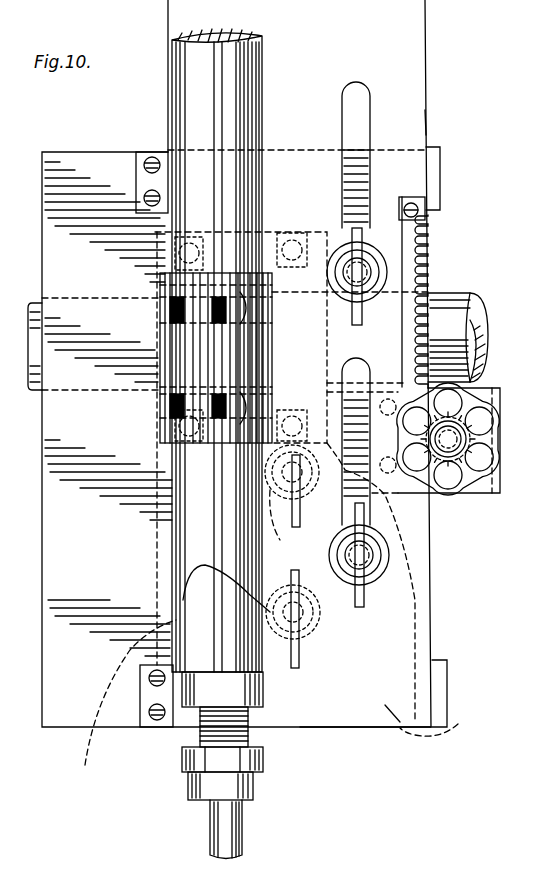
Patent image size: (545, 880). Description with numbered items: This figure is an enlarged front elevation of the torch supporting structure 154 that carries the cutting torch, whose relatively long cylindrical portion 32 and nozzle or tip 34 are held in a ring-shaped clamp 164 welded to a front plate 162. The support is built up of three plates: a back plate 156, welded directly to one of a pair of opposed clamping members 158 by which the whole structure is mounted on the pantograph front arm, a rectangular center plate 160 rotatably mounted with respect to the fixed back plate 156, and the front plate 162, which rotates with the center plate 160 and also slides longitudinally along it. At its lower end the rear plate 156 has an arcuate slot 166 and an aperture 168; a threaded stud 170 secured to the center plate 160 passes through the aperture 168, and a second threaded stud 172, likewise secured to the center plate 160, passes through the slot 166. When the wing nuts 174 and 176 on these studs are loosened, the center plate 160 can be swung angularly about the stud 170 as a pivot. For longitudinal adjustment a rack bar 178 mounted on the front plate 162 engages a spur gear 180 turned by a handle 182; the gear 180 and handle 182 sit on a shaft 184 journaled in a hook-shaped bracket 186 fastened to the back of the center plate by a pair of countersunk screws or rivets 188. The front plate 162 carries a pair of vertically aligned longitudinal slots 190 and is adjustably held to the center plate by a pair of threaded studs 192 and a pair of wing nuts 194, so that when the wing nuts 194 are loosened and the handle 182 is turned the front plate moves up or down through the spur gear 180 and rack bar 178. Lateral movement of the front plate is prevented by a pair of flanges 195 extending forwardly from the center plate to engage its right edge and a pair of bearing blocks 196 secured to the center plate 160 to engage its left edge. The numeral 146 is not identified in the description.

The cylindrical portion 32 is at (192, 548).
The nozzle or tip 34 is at (235, 828).
The shaft 146 is at (466, 323).
The supporting structure 154 is at (432, 122).
The back plate 156 is at (396, 721).
The clamping members 158 is at (318, 232).
The center plate 160 is at (62, 152).
The front plate 162 is at (410, 45).
The ring-shaped clamp 164 is at (172, 337).
The arcuate slot 166 is at (170, 677).
The aperture 168 is at (487, 352).
The threaded stud 170 is at (292, 501).
The second threaded stud 172 is at (320, 622).
The wing nut 174 is at (300, 518).
The wing nut 176 is at (300, 668).
The rack bar 178 is at (412, 248).
The spur gear 180 is at (508, 388).
The handle 182 is at (470, 400).
The shaft 184 is at (455, 440).
The hook-shaped bracket 186 is at (500, 486).
The countersunk screws or rivets 188 is at (405, 498).
The longitudinal slots 190 is at (370, 98).
The threaded studs 192 is at (360, 275).
The wing nuts 194 is at (368, 226).
The flanges 195 is at (440, 166).
The bearing blocks 196 is at (144, 150).